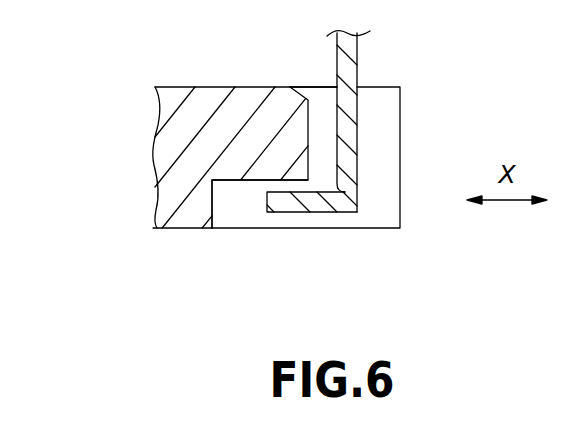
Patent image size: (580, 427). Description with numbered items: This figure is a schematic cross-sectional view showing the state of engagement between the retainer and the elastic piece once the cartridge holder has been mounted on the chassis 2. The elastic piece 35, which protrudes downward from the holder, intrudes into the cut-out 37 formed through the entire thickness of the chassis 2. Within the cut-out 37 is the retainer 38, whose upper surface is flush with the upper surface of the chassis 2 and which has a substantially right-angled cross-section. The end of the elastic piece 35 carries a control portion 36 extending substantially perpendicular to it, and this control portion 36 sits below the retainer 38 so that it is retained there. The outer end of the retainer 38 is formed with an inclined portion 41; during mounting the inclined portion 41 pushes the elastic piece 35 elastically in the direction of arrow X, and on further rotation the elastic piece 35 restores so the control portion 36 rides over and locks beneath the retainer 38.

The chassis 2 is at (152, 157).
The elastic piece 35 is at (357, 60).
The control portion 36 is at (327, 213).
The cut-out 37 is at (313, 87).
The retainer 38 is at (258, 168).
The inclined portion 41 is at (297, 88).